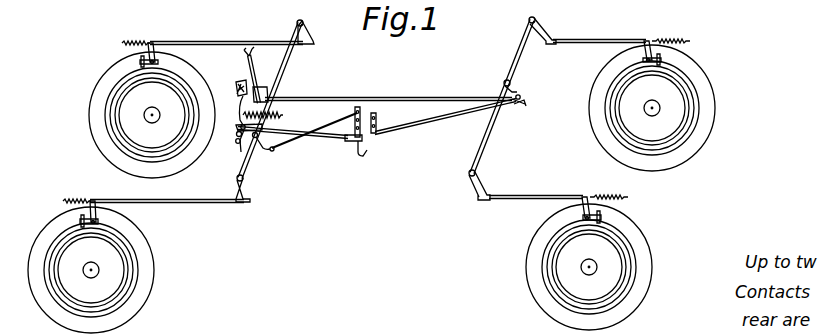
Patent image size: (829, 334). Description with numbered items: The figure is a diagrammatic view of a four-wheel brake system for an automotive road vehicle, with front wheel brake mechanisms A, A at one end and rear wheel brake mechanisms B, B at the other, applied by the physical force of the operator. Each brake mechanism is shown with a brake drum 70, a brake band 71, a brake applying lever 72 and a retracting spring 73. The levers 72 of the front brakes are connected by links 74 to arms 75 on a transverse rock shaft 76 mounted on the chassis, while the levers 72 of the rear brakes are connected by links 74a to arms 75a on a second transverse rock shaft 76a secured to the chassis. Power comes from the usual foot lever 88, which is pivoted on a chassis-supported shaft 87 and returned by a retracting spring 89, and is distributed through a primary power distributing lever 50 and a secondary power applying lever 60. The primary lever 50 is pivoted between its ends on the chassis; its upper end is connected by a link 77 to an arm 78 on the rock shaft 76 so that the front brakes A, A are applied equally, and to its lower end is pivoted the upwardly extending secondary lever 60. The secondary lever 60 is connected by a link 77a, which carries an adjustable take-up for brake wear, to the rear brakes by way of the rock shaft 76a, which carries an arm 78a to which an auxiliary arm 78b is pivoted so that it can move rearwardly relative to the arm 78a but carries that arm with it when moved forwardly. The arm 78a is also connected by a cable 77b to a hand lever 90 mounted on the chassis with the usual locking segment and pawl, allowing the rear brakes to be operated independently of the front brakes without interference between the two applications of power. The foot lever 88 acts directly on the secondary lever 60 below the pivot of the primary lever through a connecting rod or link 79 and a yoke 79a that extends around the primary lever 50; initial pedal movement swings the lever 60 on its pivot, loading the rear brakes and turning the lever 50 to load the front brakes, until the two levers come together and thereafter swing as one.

The primary power distributing lever 50 is at (360, 155).
The secondary power applying lever 60 is at (376, 124).
The brake drum 70 is at (125, 97).
The brake band 71 is at (113, 97).
The brake applying lever 72 is at (158, 52).
The retracting spring 73 is at (134, 35).
The link 74 is at (232, 40).
The link 74a is at (586, 35).
The arm 75 is at (310, 26).
The arm 75a is at (542, 30).
The rock shaft 76 is at (285, 75).
The rock shaft 76a is at (513, 70).
The link 77 is at (328, 132).
The link 77a is at (412, 125).
The cable 77b is at (424, 92).
The arm 78 is at (266, 153).
The arm 78a is at (517, 88).
The auxiliary arm 78b is at (526, 101).
The connecting rod or link 79 is at (310, 136).
The yoke 79a is at (346, 142).
The shaft 87 is at (242, 156).
The foot lever 88 is at (238, 141).
The retracting spring 89 is at (278, 116).
The hand lever 90 is at (250, 78).
The front wheel brake mechanism A is at (146, 263).
The rear wheel brake mechanism B is at (675, 102).